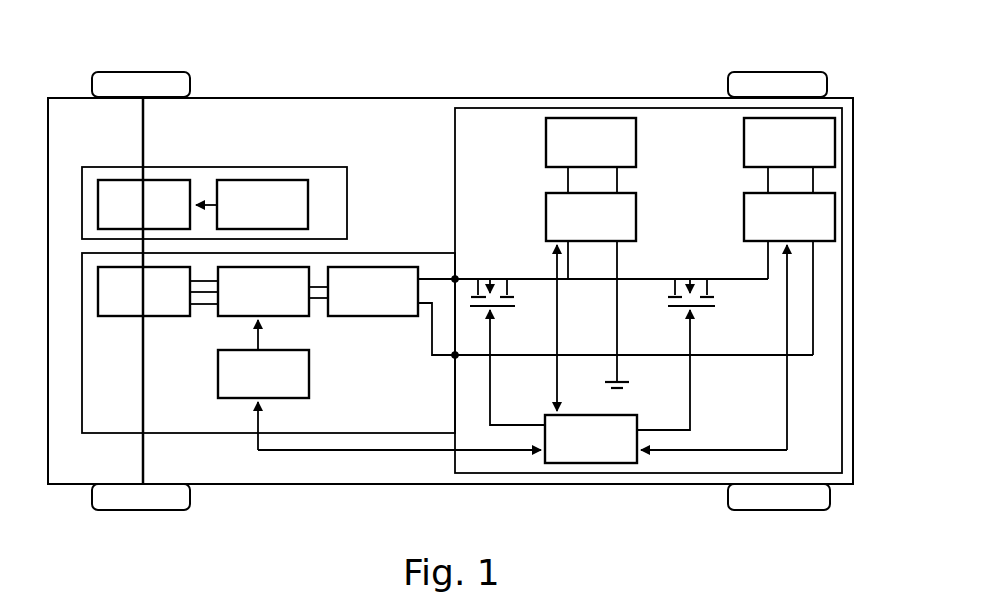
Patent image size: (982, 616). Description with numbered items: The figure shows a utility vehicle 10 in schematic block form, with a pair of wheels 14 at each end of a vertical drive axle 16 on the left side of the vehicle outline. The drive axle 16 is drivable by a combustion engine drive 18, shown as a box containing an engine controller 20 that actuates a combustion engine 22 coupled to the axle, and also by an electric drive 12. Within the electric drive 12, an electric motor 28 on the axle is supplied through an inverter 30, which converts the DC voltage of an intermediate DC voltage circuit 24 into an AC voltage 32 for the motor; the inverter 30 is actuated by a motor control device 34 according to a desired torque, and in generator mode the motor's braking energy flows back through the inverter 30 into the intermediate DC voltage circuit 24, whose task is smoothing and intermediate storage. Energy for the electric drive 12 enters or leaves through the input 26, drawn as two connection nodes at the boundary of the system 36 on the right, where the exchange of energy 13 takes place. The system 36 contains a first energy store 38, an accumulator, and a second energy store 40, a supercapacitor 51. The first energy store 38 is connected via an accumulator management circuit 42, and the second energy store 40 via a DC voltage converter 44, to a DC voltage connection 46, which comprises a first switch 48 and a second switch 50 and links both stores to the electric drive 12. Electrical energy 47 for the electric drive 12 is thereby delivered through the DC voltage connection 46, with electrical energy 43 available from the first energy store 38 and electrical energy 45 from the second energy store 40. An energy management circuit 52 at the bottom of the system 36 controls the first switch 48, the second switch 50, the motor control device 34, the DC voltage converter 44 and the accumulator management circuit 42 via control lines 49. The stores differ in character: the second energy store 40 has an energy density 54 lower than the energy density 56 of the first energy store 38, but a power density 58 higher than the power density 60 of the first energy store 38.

The vehicle 10 is at (352, 97).
The electric drive 12 is at (366, 252).
The energy 13 is at (450, 334).
The wheels 14 is at (148, 71).
The drive axle 16 is at (143, 133).
The combustion engine drive 18 is at (222, 167).
The engine controller 20 is at (246, 219).
The combustion engine 22 is at (128, 219).
The intermediate DC voltage circuit 24 is at (357, 306).
The input 26 is at (455, 279).
The electric motor 28 is at (128, 306).
The inverter 30 is at (247, 306).
The AC voltage 32 is at (206, 316).
The motor control device 34 is at (247, 389).
The system 36 is at (455, 152).
The first energy store 38 is at (773, 157).
The second energy store 40 is at (546, 140).
The accumulator management circuit 42 is at (773, 231).
The electrical energy 43 is at (826, 270).
The DC voltage converter 44 is at (575, 231).
The electrical energy 45 is at (596, 275).
The DC voltage connection 46 is at (626, 284).
The electrical energy 47 is at (462, 334).
The first switch 48 is at (505, 312).
The control lines 49 is at (367, 450).
The second switch 50 is at (710, 311).
The supercapacitor 51 is at (575, 157).
The energy management circuit 52 is at (575, 454).
The energy density 54 is at (620, 132).
The energy density 56 is at (757, 132).
The power density 58 is at (563, 132).
The power density 60 is at (818, 132).